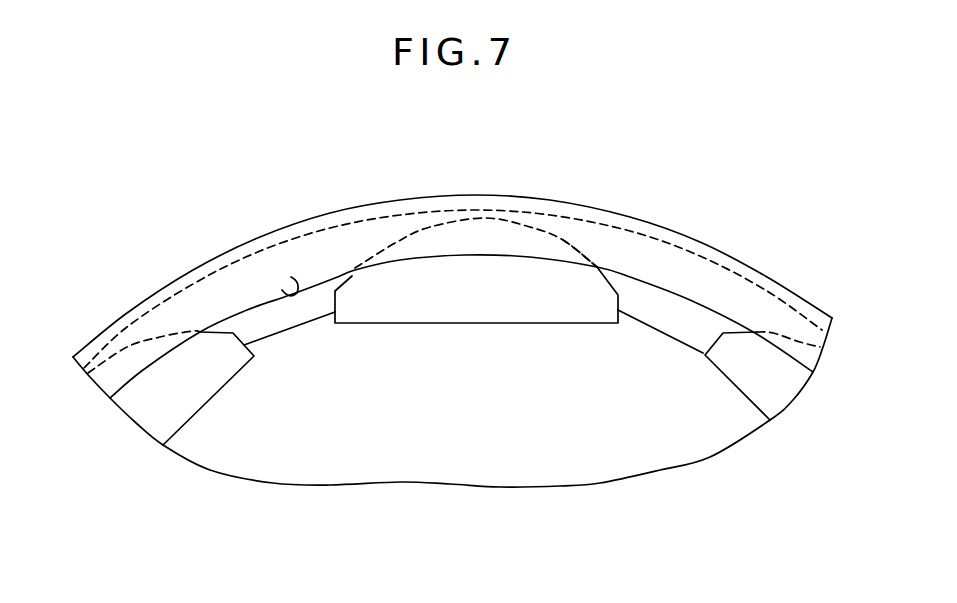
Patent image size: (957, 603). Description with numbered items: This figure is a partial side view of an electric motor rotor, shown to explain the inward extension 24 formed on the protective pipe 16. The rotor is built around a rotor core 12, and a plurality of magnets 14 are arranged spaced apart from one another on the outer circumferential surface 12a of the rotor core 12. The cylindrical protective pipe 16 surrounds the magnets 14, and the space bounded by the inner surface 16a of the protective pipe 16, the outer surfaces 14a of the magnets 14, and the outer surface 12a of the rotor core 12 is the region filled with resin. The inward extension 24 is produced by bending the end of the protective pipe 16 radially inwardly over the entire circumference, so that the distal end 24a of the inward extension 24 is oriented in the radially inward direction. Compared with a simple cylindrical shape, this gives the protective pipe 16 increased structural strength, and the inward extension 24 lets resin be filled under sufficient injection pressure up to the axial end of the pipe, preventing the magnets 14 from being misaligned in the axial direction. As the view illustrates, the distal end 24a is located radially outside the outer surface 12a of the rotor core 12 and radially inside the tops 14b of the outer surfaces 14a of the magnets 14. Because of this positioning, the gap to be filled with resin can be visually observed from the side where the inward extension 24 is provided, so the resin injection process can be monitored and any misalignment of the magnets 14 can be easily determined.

The rotor core 12 is at (682, 438).
The outer circumferential surface of the rotor core 12a is at (285, 318).
The magnets 14 is at (398, 278).
The outer surfaces of the magnets 14a is at (583, 250).
The tops of the outer surfaces of the magnets 14b is at (490, 218).
The protective pipe 16 is at (675, 228).
The inner surface of the protective pipe 16a is at (720, 265).
The inward extension 24 is at (201, 297).
The distal end of the inward extension 24a is at (282, 290).